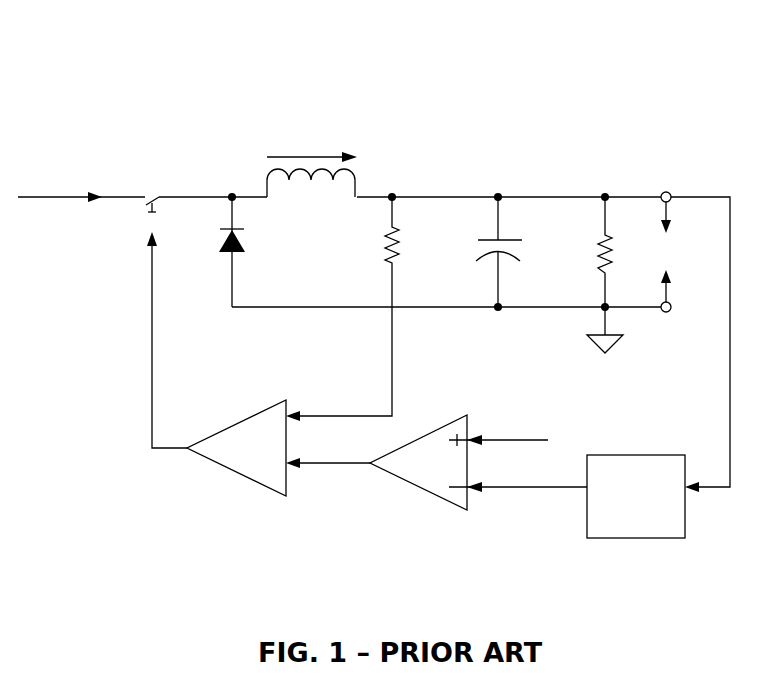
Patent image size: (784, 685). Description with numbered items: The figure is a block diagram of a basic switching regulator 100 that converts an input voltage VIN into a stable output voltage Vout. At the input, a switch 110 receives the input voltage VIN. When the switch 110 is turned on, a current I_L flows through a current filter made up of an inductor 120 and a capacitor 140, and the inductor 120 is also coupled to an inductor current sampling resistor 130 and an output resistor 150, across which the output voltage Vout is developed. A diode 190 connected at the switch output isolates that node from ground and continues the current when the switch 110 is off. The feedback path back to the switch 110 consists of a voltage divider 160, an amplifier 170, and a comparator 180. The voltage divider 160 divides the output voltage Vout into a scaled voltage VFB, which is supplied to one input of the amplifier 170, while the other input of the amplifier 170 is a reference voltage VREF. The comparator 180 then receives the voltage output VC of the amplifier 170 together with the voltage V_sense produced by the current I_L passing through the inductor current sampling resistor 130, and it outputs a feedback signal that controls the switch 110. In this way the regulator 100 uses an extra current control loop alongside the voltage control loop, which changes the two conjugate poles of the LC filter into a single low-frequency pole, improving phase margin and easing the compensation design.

The switching regulator 100 is at (112, 38).
The switch 110 is at (153, 182).
The inductor 120 is at (312, 174).
The inductor current sampling resistor 130 is at (342, 309).
The capacitor 140 is at (477, 252).
The output resistor 150 is at (584, 252).
The voltage divider 160 is at (652, 529).
The amplifier 170 is at (443, 462).
The comparator 180 is at (263, 454).
The diode 190 is at (251, 252).